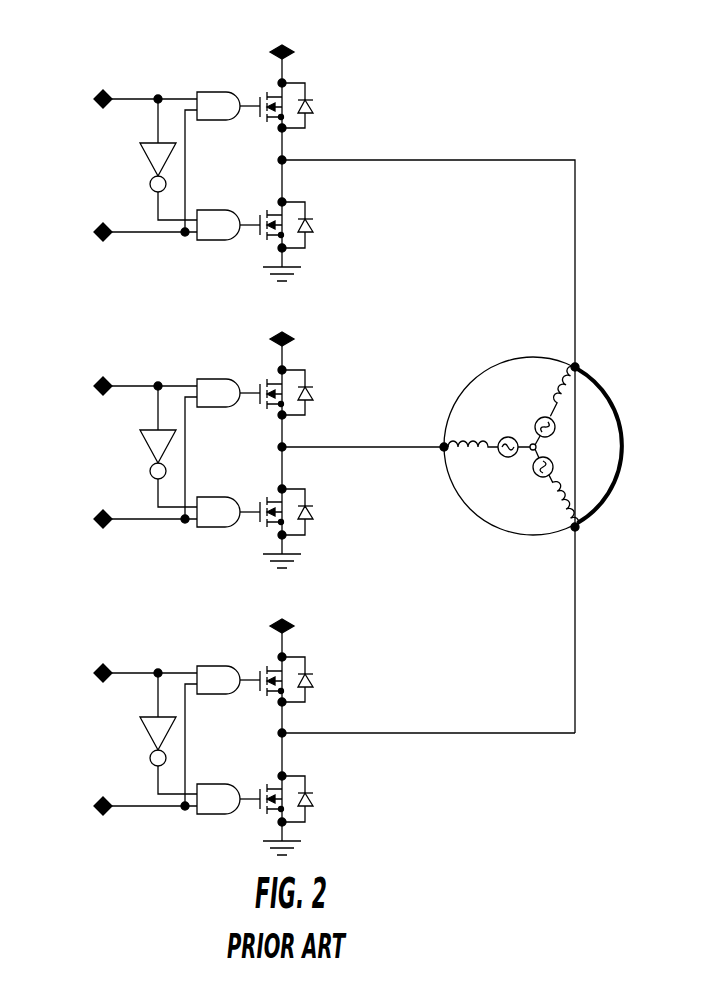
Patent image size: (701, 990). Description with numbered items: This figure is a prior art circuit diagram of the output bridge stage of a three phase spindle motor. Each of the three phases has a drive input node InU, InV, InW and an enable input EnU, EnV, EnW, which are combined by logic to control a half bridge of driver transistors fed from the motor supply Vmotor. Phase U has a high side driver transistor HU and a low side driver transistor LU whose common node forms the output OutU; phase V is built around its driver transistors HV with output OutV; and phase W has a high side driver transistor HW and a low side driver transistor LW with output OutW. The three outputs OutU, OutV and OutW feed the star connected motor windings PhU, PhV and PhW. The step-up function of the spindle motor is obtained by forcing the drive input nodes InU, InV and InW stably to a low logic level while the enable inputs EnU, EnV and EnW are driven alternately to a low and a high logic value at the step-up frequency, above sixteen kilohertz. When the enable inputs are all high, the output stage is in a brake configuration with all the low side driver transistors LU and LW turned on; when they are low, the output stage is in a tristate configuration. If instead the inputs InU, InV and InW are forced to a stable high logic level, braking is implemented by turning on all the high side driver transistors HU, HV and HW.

The motor supply voltage Vmotor is at (282, 324).
The drive input node InU is at (127, 99).
The enable input EnU is at (127, 232).
The high side driver transistor HU is at (278, 100).
The low side driver transistor LU is at (278, 220).
The phase U output OutU is at (428, 432).
The drive input node InV is at (127, 386).
The enable input EnV is at (127, 519).
The high side driver transistor HV is at (278, 447).
The phase V output OutV is at (363, 434).
The drive input node InW is at (127, 673).
The enable input EnW is at (127, 806).
The high side driver transistor HW is at (278, 674).
The low side driver transistor LW is at (278, 794).
The phase W output OutW is at (428, 630).
The motor phase U winding PhU is at (563, 404).
The motor phase V winding PhV is at (489, 433).
The motor phase W winding PhW is at (543, 488).